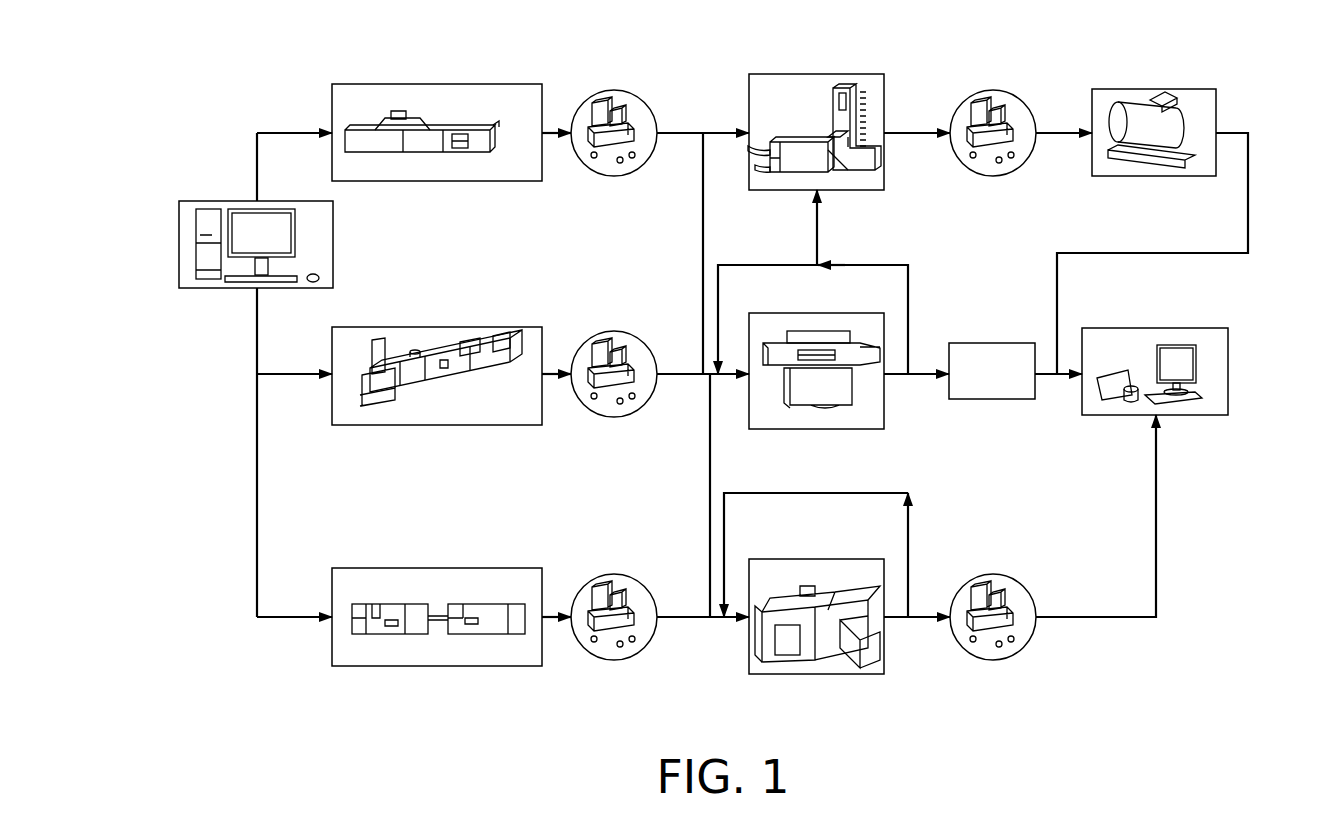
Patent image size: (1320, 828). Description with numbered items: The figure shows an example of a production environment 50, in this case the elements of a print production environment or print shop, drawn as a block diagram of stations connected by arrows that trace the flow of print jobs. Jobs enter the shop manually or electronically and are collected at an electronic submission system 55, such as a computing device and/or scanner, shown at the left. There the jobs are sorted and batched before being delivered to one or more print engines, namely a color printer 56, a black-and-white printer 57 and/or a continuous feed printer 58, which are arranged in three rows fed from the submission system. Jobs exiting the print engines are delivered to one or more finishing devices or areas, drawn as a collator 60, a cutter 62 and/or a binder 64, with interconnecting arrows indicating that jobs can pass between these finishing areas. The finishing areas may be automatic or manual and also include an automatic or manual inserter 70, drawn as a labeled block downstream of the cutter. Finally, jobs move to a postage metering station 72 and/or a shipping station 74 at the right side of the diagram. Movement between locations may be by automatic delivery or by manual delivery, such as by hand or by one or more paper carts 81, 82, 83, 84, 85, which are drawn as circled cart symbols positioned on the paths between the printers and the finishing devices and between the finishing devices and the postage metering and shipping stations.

The production environment 50 is at (276, 64).
The electronic submission system 55 is at (212, 289).
The color printer 56 is at (453, 182).
The black-and-white printer 57 is at (453, 426).
The continuous feed printer 58 is at (453, 667).
The collator 60 is at (829, 191).
The cutter 62 is at (829, 430).
The binder 64 is at (829, 675).
The inserter 70 is at (990, 400).
The postage metering station 72 is at (1148, 177).
The shipping station 74 is at (1183, 416).
The paper cart 81 is at (612, 176).
The paper cart 82 is at (612, 417).
The paper cart 83 is at (612, 660).
The paper cart 84 is at (992, 176).
The paper cart 85 is at (992, 660).